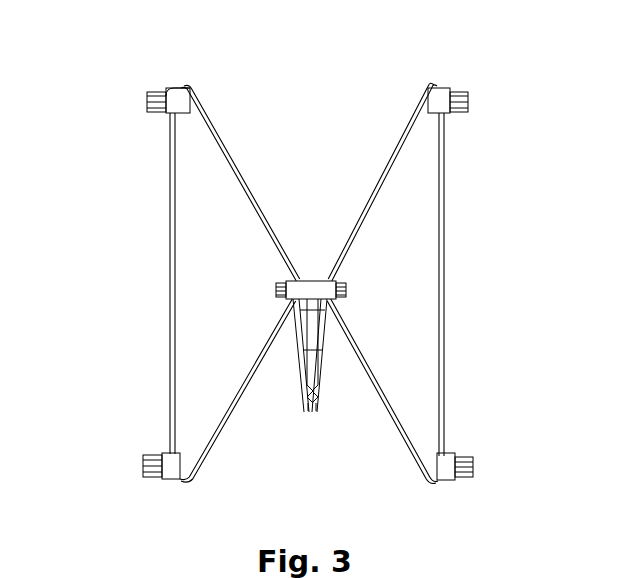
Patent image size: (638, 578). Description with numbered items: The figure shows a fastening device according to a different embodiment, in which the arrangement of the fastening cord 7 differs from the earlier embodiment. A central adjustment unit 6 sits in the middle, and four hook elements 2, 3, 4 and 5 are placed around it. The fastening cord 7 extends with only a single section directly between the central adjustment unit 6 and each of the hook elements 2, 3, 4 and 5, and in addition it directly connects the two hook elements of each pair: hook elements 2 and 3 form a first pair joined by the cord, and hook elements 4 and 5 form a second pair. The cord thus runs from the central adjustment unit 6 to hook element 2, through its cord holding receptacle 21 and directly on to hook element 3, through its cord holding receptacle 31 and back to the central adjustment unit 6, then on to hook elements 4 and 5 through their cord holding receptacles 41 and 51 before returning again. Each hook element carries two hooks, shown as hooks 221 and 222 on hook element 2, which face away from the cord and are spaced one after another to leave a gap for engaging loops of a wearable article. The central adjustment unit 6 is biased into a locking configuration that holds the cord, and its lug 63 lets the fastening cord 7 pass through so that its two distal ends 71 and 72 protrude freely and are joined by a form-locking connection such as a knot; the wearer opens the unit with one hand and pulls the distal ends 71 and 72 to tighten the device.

The hook element 2 is at (131, 72).
The cord holding receptacle 21 is at (228, 74).
The hook 221 is at (96, 93).
The hook 222 is at (108, 135).
The hook element 3 is at (116, 433).
The cord holding receptacle 31 is at (94, 507).
The hook element 4 is at (497, 424).
The cord holding receptacle 41 is at (490, 508).
The hook element 5 is at (487, 64).
The cord holding receptacle 51 is at (491, 138).
The central adjustment unit 6 is at (318, 220).
The lug 63 is at (200, 355).
The fastening cord 7 is at (520, 284).
The distal end 71 is at (252, 412).
The distal end 72 is at (358, 409).